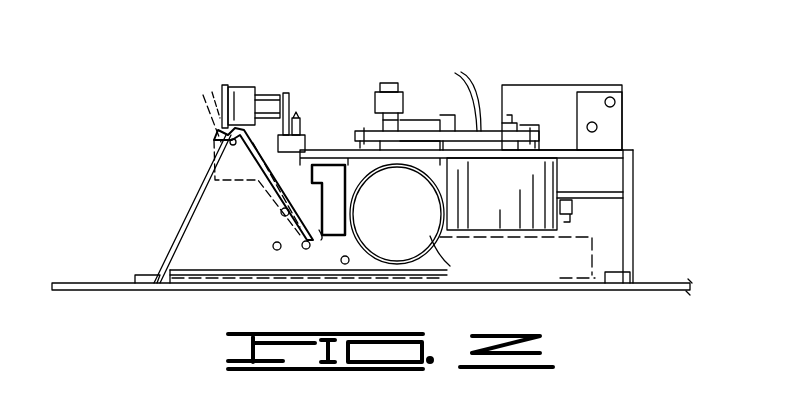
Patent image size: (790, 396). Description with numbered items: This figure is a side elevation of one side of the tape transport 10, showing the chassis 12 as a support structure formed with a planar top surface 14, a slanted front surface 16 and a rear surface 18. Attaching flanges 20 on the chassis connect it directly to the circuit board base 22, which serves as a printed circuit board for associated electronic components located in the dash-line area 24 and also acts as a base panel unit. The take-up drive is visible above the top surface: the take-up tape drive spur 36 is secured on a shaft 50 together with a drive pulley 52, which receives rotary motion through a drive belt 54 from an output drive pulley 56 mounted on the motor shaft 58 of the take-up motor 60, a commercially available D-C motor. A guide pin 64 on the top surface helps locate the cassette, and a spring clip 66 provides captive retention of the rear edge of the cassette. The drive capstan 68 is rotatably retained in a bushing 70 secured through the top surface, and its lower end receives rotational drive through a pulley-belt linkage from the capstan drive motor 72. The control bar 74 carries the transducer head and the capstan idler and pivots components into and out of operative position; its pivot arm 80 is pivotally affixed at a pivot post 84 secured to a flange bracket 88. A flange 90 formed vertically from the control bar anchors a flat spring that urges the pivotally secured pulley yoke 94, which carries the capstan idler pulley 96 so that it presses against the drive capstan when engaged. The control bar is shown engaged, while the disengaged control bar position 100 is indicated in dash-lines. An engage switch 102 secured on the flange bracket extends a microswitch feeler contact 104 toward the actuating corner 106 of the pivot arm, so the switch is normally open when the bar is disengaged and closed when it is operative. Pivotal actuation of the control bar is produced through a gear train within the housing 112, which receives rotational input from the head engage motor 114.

The tape transport 10 is at (505, 62).
The chassis 12 is at (312, 152).
The planar top surface 14 is at (565, 150).
The slanted front surface 16 is at (178, 218).
The rear surface 18 is at (633, 200).
The attaching flanges 20 is at (148, 274).
The circuit board base 22 is at (640, 287).
The dash-line area 24 is at (529, 262).
The tape drive spur 36 is at (385, 85).
The shaft 50 is at (380, 122).
The drive pulley 52 is at (410, 127).
The drive belt 54 is at (428, 133).
The output drive pulley 56 is at (531, 127).
The motor shaft 58 is at (512, 115).
The take-up motor 60 is at (520, 180).
The guide pin 64 is at (298, 111).
The spring clip 66 is at (467, 80).
The drive capstan 68 is at (286, 95).
The bushing 70 is at (298, 138).
The capstan drive motor 72 is at (565, 85).
The control bar 74 is at (210, 143).
The pivot arm 80 is at (266, 188).
The pivot post 84 is at (280, 214).
The flange bracket 88 is at (272, 245).
The flange 90 is at (221, 86).
The pulley yoke 94 is at (240, 86).
The capstan idler pulley 96 is at (270, 93).
The disengaged control bar position 100 is at (203, 108).
The engage switch 102 is at (333, 216).
The microswitch feeler contact 104 is at (325, 240).
The actuating corner 106 is at (300, 270).
The housing 112 is at (425, 258).
The head engage motor 114 is at (440, 240).